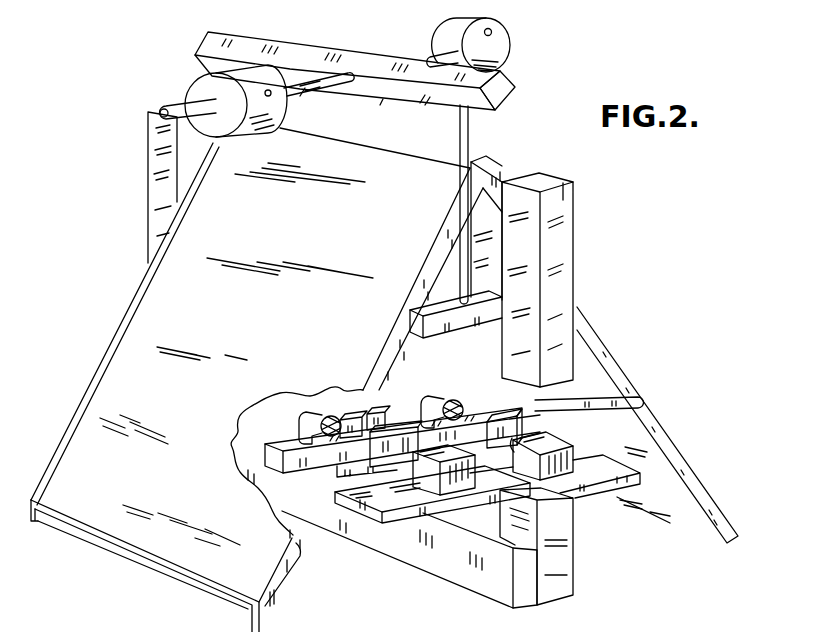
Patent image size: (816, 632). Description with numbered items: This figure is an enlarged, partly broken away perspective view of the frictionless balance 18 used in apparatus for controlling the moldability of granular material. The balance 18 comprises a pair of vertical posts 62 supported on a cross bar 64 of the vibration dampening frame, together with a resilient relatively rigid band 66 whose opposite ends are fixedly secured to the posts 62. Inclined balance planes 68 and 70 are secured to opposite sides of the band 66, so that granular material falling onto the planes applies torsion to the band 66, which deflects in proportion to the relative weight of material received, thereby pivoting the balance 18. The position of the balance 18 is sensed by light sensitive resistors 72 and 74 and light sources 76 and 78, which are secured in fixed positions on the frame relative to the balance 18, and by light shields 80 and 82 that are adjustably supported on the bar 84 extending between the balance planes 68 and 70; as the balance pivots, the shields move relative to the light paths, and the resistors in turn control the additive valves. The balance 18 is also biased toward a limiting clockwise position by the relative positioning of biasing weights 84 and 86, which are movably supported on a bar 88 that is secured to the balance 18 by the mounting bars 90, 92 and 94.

The frictionless balance 18 is at (116, 320).
The vertical posts 62 is at (578, 268).
The cross bar 64 is at (447, 568).
The resilient relatively rigid band 66 is at (498, 170).
The inclined balance plane 68 is at (115, 528).
The inclined balance plane 70 is at (683, 458).
The light sensitive resistor 72 is at (427, 487).
The light sensitive resistor 74 is at (568, 460).
The light source 76 is at (297, 418).
The light source 78 is at (400, 357).
The light shield 80 is at (390, 423).
The light shield 82 is at (500, 414).
The bar 84 is at (508, 57).
The biasing weight 86 is at (188, 82).
The bar 88 is at (312, 92).
The mounting bar 90 is at (410, 97).
The mounting bar 92 is at (460, 140).
The mounting bar 94 is at (446, 326).